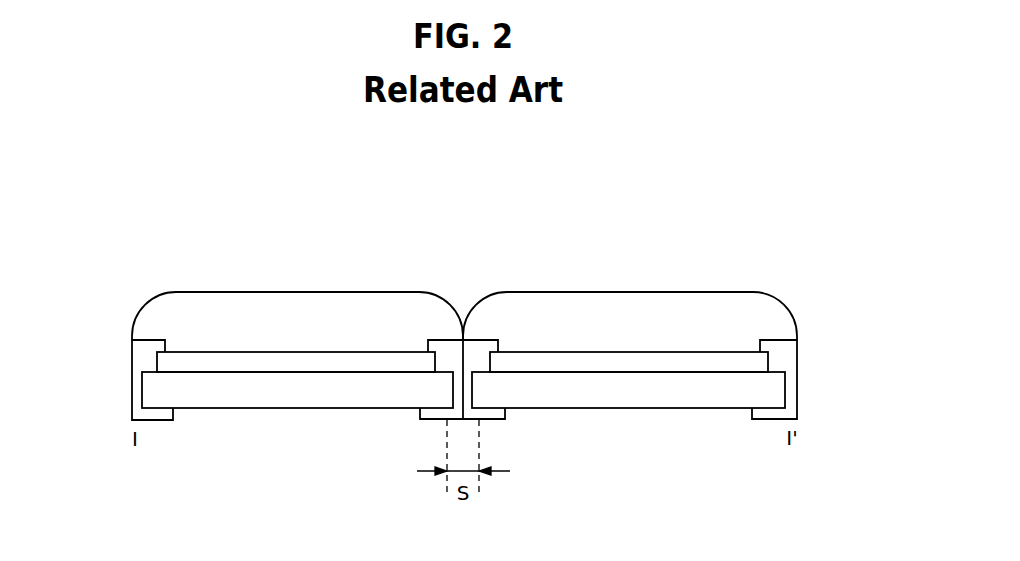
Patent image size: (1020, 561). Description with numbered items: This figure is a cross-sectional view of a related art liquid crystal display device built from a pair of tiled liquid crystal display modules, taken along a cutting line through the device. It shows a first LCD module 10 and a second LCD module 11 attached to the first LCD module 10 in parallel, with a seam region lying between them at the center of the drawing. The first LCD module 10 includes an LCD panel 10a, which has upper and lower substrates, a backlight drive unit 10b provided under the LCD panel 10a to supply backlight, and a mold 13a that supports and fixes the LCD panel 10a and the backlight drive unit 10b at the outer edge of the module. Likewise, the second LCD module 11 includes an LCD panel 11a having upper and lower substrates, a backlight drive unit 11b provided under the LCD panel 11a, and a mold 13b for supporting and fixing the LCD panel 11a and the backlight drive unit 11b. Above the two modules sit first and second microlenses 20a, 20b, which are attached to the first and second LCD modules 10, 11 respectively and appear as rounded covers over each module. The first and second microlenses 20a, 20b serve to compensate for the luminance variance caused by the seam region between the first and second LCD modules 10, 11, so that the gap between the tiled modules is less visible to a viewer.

The first LCD module 10 is at (297, 428).
The LCD panel 10a is at (203, 362).
The backlight drive unit 10b is at (243, 393).
The second LCD module 11 is at (628, 440).
The LCD panel 11a is at (680, 362).
The backlight drive unit 11b is at (643, 403).
The mold 13a is at (140, 360).
The mold 13b is at (785, 358).
The first microlens 20a is at (280, 303).
The second microlens 20b is at (642, 302).